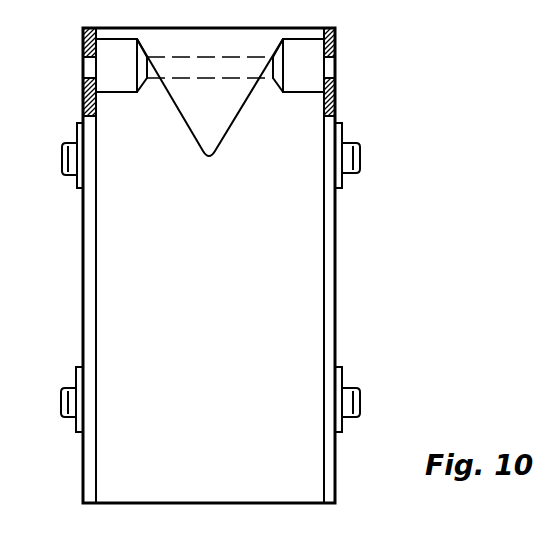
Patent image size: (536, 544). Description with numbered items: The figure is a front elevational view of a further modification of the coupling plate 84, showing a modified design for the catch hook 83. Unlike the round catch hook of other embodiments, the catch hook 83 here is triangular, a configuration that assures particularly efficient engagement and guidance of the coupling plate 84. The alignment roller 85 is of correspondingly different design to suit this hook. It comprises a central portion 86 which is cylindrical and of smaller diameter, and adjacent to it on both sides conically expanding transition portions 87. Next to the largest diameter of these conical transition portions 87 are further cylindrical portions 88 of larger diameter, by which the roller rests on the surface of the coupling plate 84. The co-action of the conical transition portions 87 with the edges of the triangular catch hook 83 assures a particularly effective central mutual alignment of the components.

The catch hook 83 is at (222, 132).
The coupling plate 84 is at (113, 245).
The alignment roller 85 is at (107, 81).
The central portion 86 is at (152, 79).
The conical transition portions 87 is at (105, 46).
The cylindrical portions 88 is at (87, 31).